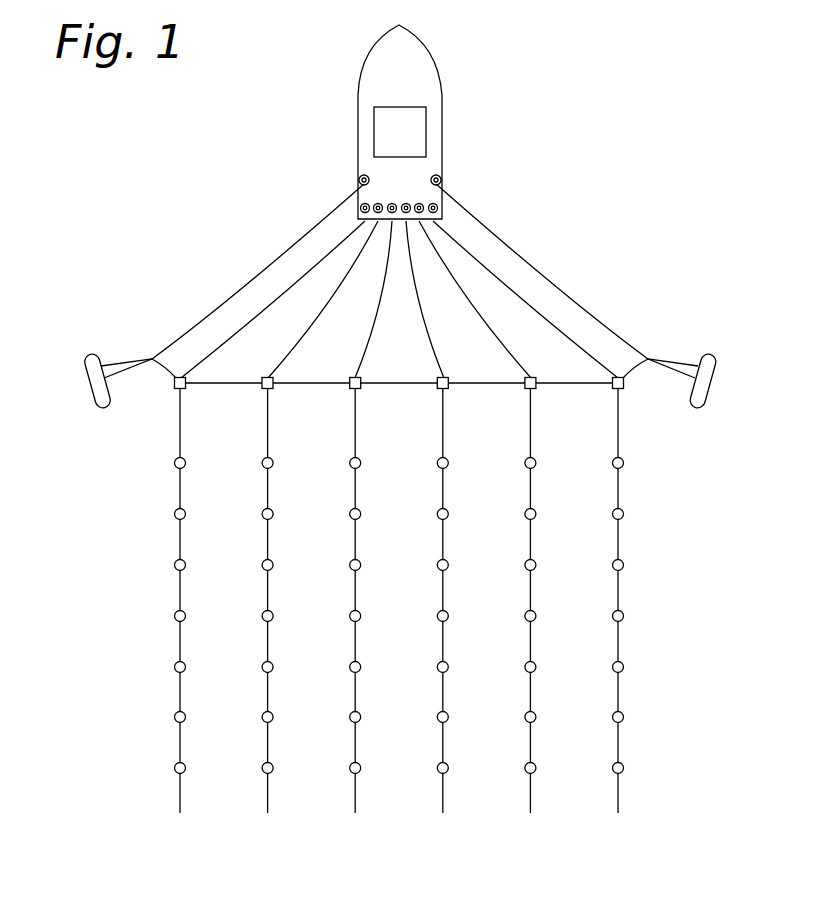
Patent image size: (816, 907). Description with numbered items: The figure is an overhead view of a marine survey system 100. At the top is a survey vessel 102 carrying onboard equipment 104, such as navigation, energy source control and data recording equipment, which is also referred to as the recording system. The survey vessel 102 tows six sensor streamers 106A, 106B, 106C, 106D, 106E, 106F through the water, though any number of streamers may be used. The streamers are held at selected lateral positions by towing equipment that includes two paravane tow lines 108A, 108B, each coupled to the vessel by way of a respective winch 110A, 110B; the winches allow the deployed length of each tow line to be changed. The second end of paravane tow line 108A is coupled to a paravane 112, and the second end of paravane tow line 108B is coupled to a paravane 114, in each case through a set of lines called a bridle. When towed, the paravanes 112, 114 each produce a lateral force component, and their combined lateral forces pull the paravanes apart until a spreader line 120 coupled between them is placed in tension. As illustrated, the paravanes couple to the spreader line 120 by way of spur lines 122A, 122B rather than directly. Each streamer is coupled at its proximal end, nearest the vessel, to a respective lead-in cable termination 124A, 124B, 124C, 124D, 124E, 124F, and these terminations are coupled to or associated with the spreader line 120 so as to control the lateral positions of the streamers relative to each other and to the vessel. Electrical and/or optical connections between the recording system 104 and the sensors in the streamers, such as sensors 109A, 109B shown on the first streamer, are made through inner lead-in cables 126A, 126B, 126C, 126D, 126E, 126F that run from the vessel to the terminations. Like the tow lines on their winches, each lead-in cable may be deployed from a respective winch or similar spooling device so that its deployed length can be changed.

The marine survey system 100 is at (156, 150).
The survey vessel 102 is at (361, 72).
The onboard equipment 104 is at (400, 107).
The sensor streamer 106A is at (178, 790).
The sensor streamer 106B is at (266, 790).
The sensor streamer 106C is at (353, 790).
The sensor streamer 106D is at (445, 790).
The sensor streamer 106E is at (533, 790).
The sensor streamer 106F is at (620, 790).
The paravane tow line 108A is at (326, 215).
The paravane tow line 108B is at (473, 216).
The sensor 109A is at (175, 464).
The sensor 109B is at (175, 514).
The winch 110A is at (360, 177).
The winch 110B is at (440, 177).
The paravane 112 is at (90, 384).
The paravane 114 is at (710, 382).
The spreader line 120 is at (385, 386).
The spur line 122A is at (156, 373).
The spur line 122B is at (643, 373).
The lead-in cable termination 124A is at (175, 387).
The lead-in cable termination 124B is at (263, 387).
The lead-in cable termination 124C is at (351, 387).
The lead-in cable termination 124D is at (449, 387).
The lead-in cable termination 124E is at (537, 387).
The lead-in cable termination 124F is at (624, 387).
The inner lead-in cable 126A is at (331, 250).
The inner lead-in cable 126B is at (337, 288).
The inner lead-in cable 126C is at (364, 345).
The inner lead-in cable 126D is at (435, 345).
The inner lead-in cable 126E is at (462, 288).
The inner lead-in cable 126F is at (468, 250).